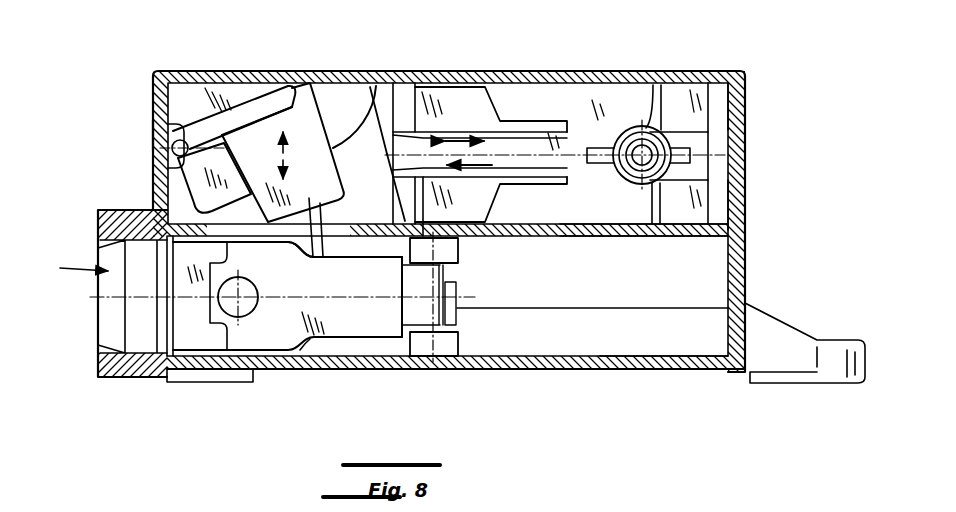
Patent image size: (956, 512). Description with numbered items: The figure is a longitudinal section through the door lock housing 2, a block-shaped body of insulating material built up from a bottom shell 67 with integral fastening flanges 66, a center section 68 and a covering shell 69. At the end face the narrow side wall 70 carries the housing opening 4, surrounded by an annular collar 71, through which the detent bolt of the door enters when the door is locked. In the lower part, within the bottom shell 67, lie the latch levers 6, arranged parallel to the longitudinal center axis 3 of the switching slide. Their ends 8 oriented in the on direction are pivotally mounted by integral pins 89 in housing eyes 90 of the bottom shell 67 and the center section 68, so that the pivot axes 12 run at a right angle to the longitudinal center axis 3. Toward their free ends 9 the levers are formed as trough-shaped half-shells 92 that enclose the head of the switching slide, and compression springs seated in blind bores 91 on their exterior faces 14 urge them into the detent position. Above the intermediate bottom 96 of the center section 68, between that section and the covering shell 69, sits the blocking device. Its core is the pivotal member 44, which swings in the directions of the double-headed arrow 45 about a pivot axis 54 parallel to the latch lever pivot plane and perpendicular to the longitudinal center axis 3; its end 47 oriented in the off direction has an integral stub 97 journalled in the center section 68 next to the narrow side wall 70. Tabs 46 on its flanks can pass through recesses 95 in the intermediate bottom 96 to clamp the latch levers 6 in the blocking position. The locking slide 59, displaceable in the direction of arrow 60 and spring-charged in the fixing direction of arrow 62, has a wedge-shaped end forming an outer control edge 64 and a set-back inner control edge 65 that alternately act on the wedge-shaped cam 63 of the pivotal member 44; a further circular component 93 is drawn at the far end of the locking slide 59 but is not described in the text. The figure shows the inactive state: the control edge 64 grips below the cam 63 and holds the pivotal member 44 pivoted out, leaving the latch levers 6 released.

The door lock housing 2 is at (701, 66).
The longitudinal center axis 3 is at (324, 296).
The housing opening 4 is at (74, 268).
The latch levers 6 is at (332, 352).
The ends of the latch levers 8 is at (395, 343).
The free ends 9 is at (168, 327).
The pivot axes 12 is at (433, 375).
The exterior faces 14 is at (368, 327).
The pivotal member 44 is at (257, 103).
The double-headed arrow 45 is at (284, 147).
The tabs 46 is at (313, 252).
The end of the pivotal member 47 is at (178, 196).
The pivot axis 54 is at (170, 166).
The locking slide 59 is at (538, 116).
The arrow 60 is at (465, 136).
The arrow 62 is at (469, 170).
The wedge-shaped cam 63 is at (353, 97).
The outer control edge 64 is at (383, 89).
The inner control edge 65 is at (392, 189).
The fastening flanges 66 is at (194, 375).
The bottom shell 67 is at (687, 373).
The center section 68 is at (746, 205).
The covering shell 69 is at (746, 103).
The narrow side wall 70 is at (150, 136).
The annular collar 71 is at (123, 374).
The integral pins 89 is at (455, 288).
The housing eyes 90 is at (460, 251).
The blind bores 91 is at (252, 306).
The trough-shaped half-shells 92 is at (288, 330).
The rotary valve 93 is at (655, 125).
The recesses 95 is at (282, 245).
The intermediate bottom 96 is at (618, 243).
The integral stub 97 is at (153, 128).